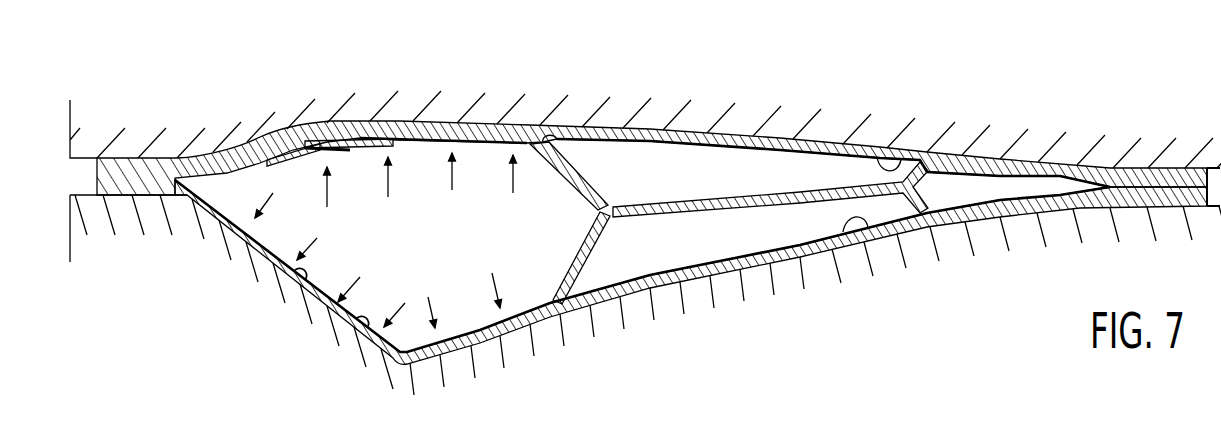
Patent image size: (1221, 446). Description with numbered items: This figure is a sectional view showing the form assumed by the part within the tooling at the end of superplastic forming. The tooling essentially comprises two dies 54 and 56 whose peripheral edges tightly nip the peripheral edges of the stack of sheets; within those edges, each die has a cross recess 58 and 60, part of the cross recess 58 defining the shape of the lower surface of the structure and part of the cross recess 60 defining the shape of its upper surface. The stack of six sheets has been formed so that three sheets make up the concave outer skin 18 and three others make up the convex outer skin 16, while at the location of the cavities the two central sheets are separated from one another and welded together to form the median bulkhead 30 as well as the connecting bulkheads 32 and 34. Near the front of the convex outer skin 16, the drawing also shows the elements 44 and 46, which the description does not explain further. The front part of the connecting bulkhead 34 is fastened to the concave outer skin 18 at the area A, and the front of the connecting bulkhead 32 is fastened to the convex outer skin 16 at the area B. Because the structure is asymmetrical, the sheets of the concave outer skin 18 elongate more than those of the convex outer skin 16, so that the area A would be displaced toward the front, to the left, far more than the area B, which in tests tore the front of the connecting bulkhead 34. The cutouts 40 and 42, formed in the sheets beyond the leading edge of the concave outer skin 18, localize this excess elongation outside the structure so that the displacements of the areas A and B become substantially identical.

The convex outer skin 16 is at (380, 130).
The concave outer skin 18 is at (497, 333).
The median bulkhead 30 is at (758, 192).
The connecting bulkhead 32 is at (565, 175).
The connecting bulkhead 34 is at (568, 265).
The cutout 40 is at (297, 291).
The cutout 42 is at (352, 318).
The layer on upper wall 44 is at (280, 160).
The layer on upper wall 46 is at (347, 150).
The die 54 is at (155, 280).
The die 56 is at (152, 116).
The cross recess 58 is at (873, 225).
The cross recess 60 is at (905, 152).
The area for fastening the front of the connecting bulkhead 34 A is at (562, 300).
The area for fastening the front of the connecting bulkhead 32 B is at (557, 140).